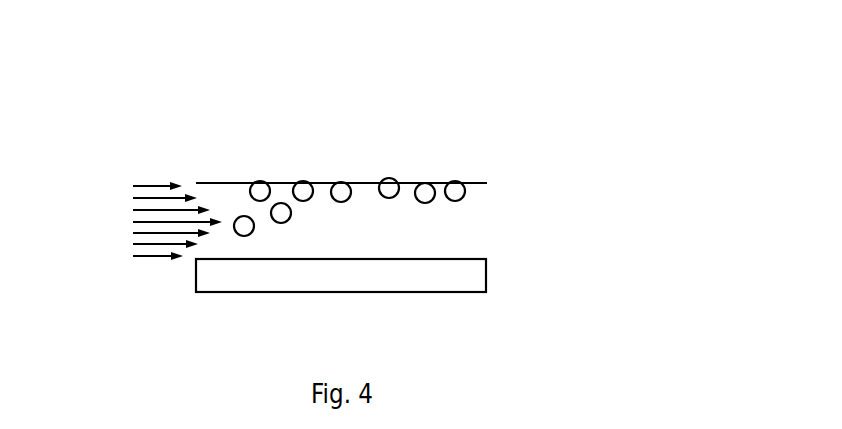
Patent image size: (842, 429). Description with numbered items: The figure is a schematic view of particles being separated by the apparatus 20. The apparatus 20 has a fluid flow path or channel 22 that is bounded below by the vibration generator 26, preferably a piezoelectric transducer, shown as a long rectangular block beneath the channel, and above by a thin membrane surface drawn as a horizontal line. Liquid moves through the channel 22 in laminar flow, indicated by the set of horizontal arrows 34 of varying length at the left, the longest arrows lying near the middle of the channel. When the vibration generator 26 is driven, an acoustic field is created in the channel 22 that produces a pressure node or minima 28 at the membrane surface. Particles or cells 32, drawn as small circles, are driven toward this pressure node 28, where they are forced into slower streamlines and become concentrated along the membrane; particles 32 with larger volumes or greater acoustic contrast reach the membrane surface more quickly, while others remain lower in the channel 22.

The apparatus 20 is at (586, 89).
The fluid flow path or channel 22 is at (498, 220).
The vibration generator 26 is at (487, 275).
The pressure node or minima 28 is at (410, 173).
The particles or cells 32 is at (302, 190).
The arrow 34 is at (150, 185).